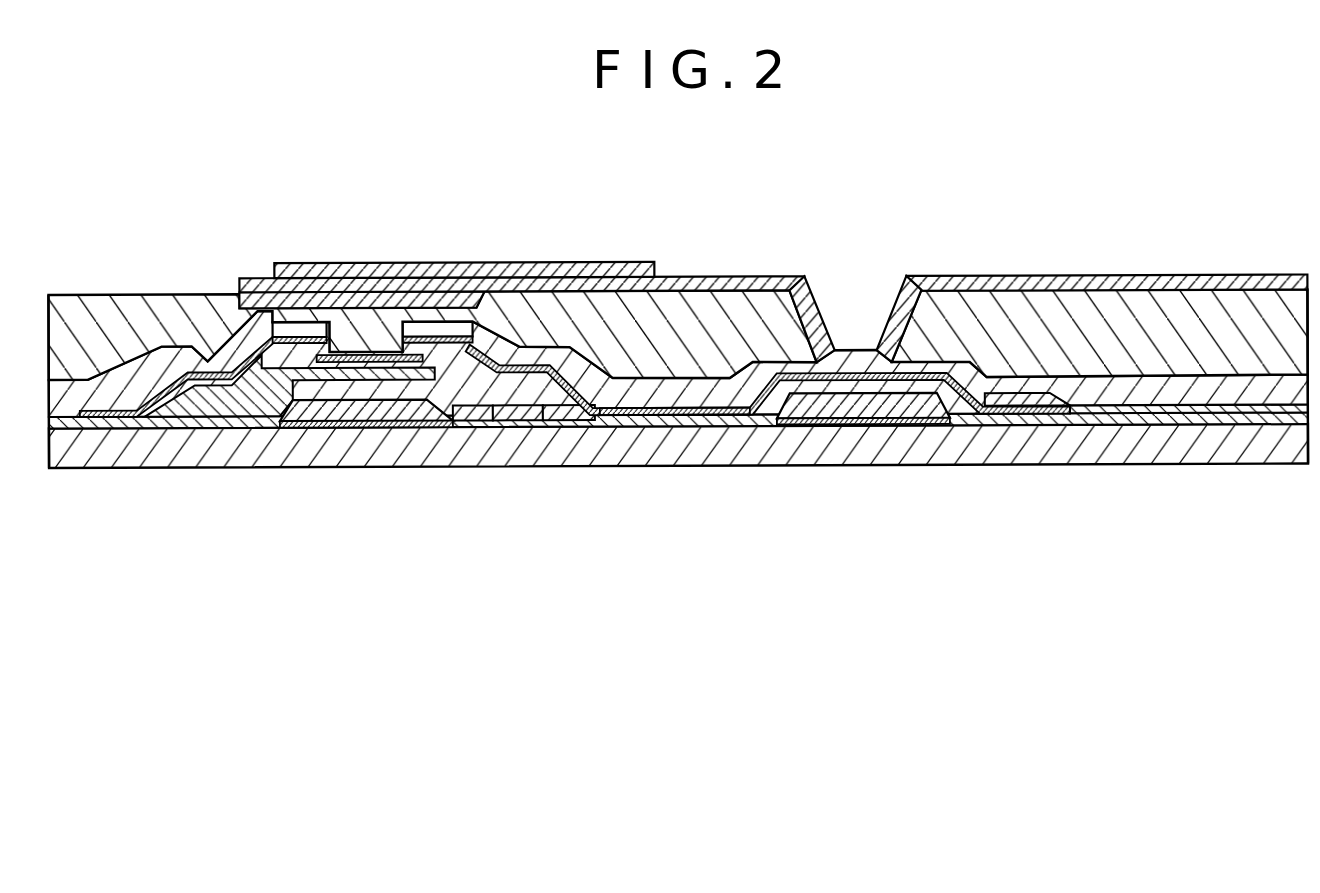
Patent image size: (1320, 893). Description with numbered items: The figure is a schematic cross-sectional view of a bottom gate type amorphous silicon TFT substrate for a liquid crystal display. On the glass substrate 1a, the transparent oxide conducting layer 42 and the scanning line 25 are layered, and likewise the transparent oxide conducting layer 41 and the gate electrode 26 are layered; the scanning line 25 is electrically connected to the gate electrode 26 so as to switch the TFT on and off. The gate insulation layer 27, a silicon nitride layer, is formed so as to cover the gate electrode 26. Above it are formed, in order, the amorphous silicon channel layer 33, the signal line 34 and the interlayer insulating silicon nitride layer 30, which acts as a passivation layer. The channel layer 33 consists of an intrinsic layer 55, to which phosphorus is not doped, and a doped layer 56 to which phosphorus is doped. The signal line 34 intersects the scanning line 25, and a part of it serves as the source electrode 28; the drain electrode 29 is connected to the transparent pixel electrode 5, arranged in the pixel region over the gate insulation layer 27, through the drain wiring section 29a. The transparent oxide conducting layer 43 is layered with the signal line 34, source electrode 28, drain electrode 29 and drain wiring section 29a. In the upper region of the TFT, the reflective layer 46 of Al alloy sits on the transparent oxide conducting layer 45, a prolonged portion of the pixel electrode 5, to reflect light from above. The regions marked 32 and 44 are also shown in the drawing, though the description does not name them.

The glass substrate 1a is at (1155, 445).
The transparent pixel electrode 5 is at (1048, 278).
The scanning line 25 is at (891, 408).
The gate electrode 26 is at (317, 415).
The gate insulation layer 27 is at (206, 428).
The source electrode 28 is at (318, 318).
The drain electrode 29 is at (438, 277).
The drain wiring section 29a is at (719, 412).
The interlayer insulating silicon nitride layer 30 is at (502, 335).
The contact hole 32 is at (826, 335).
The amorphous silicon channel layer 33 is at (507, 478).
The signal line 34 is at (373, 257).
The transparent oxide conducting layer 41 is at (436, 418).
The transparent oxide conducting layer 42 is at (815, 424).
The transparent oxide conducting layer 43 is at (205, 372).
The intermediate region 44 is at (373, 362).
The transparent oxide conducting layer 45 is at (707, 276).
The reflective layer 46 is at (610, 262).
The intrinsic layer 55 is at (507, 408).
The doped layer 56 is at (540, 390).